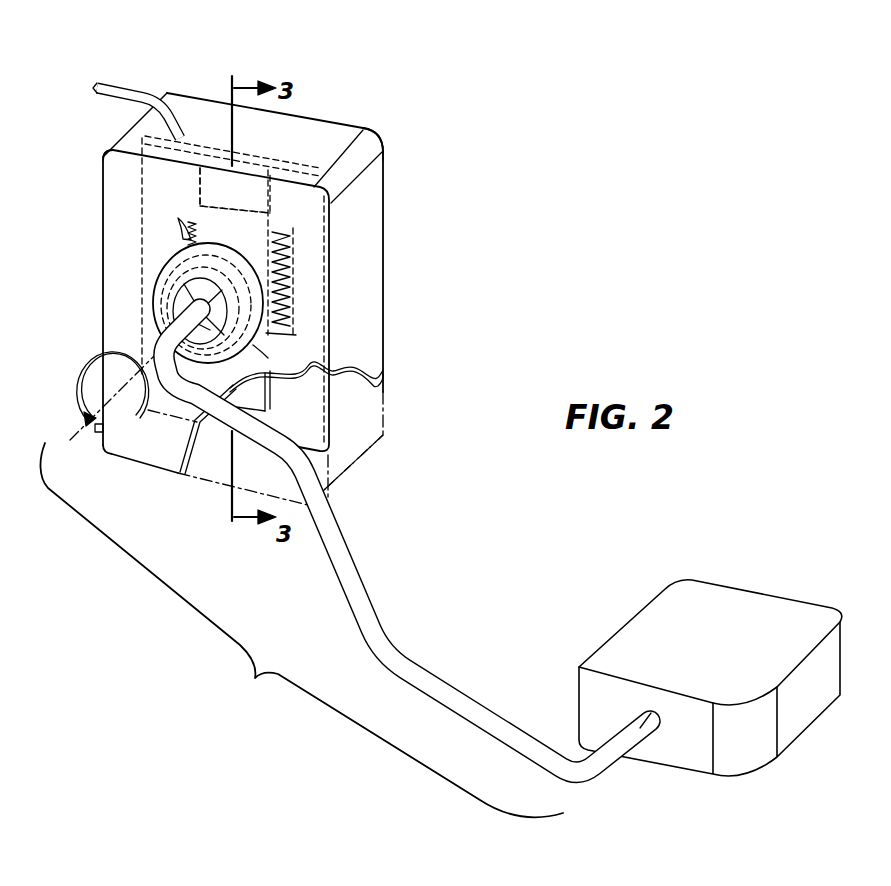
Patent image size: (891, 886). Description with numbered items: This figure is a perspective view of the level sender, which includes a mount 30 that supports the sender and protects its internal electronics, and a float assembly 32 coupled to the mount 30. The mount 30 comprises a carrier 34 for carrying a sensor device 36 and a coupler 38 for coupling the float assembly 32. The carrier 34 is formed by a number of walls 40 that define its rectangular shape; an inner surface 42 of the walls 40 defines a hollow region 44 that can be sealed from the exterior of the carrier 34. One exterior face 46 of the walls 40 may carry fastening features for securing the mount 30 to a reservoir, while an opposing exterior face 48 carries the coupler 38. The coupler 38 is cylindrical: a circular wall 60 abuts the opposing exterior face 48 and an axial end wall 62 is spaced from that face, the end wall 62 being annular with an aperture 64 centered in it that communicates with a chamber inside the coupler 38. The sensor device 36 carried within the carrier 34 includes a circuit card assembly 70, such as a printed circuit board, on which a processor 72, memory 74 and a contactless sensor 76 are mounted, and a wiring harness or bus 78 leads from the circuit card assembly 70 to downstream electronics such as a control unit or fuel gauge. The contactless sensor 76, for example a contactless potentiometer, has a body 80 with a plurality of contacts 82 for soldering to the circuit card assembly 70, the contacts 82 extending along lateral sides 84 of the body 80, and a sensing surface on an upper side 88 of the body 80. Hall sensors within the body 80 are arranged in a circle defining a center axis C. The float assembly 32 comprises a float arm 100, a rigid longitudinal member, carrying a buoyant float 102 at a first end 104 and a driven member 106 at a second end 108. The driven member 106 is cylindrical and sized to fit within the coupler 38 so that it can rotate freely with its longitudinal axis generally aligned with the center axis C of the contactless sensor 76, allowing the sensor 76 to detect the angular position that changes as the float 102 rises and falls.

The mount 30 is at (254, 294).
The float assembly 32 is at (301, 630).
The carrier 34 is at (365, 156).
The sensor device 36 is at (172, 182).
The coupler 38 is at (243, 347).
The walls 40 is at (337, 132).
The inner surface 42 is at (372, 384).
The hollow region 44 is at (355, 433).
The exterior face 46 is at (363, 128).
The opposing exterior face 48 is at (116, 209).
The circular wall 60 is at (165, 299).
The axial end wall 62 is at (165, 282).
The aperture 64 is at (183, 307).
The circuit card assembly (CCA) 70 is at (288, 168).
The processor 72 is at (221, 170).
The memory 74 is at (266, 411).
The contactless sensor 76 is at (258, 249).
The wiring harness or bus 78 is at (147, 97).
The body 80 is at (230, 243).
The contacts 82 is at (182, 220).
The lateral sides 84 is at (273, 332).
The upper side 88 is at (217, 233).
The float arm 100 is at (366, 558).
The float 102 is at (793, 617).
The first end 104 is at (617, 760).
The driven member 106 is at (212, 326).
The second end 108 is at (167, 341).
The center axis C is at (123, 386).